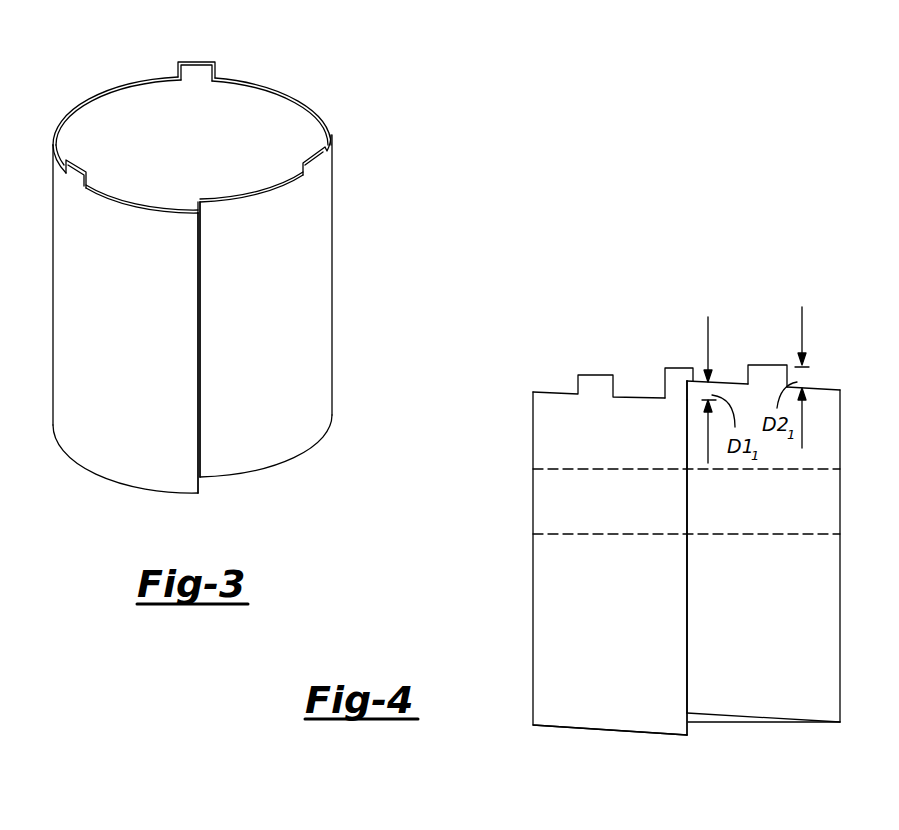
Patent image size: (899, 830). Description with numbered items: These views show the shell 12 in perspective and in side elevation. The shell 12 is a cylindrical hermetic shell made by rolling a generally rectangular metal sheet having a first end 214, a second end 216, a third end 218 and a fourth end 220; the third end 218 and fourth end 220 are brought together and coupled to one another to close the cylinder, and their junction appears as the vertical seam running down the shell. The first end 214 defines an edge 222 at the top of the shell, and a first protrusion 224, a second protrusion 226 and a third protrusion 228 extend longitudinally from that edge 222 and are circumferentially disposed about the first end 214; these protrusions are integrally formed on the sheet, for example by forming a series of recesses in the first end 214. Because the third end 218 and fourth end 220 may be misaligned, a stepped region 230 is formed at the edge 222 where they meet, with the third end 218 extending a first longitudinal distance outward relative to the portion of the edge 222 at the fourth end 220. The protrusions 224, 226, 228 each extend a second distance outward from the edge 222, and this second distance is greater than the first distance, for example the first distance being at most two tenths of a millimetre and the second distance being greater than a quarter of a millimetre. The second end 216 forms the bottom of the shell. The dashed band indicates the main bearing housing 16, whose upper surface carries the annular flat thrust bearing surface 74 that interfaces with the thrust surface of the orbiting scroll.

In FIG. 3, the shell 12 is at (358, 118).
In FIG. 4, the shell 12 is at (510, 493).
In FIG. 4, the main bearing housing 16 is at (826, 495).
In FIG. 4, the thrust bearing surface 74 is at (550, 467).
In FIG. 3, the first end 214 is at (297, 92).
In FIG. 4, the first end 214 is at (825, 389).
In FIG. 3, the second end 216 is at (278, 460).
In FIG. 4, the second end 216 is at (608, 730).
In FIG. 3, the third end 218 is at (198, 388).
In FIG. 4, the third end 218 is at (687, 663).
In FIG. 3, the fourth end 220 is at (200, 312).
In FIG. 4, the fourth end 220 is at (687, 593).
In FIG. 3, the edge 222 is at (70, 115).
In FIG. 4, the edge 222 is at (732, 382).
In FIG. 3, the first protrusion 224 is at (314, 148).
In FIG. 4, the first protrusion 224 is at (763, 365).
In FIG. 3, the second protrusion 226 is at (190, 62).
In FIG. 4, the second protrusion 226 is at (675, 368).
In FIG. 3, the third protrusion 228 is at (82, 165).
In FIG. 4, the third protrusion 228 is at (596, 375).
In FIG. 3, the stepped region 230 is at (198, 207).
In FIG. 4, the stepped region 230 is at (687, 392).